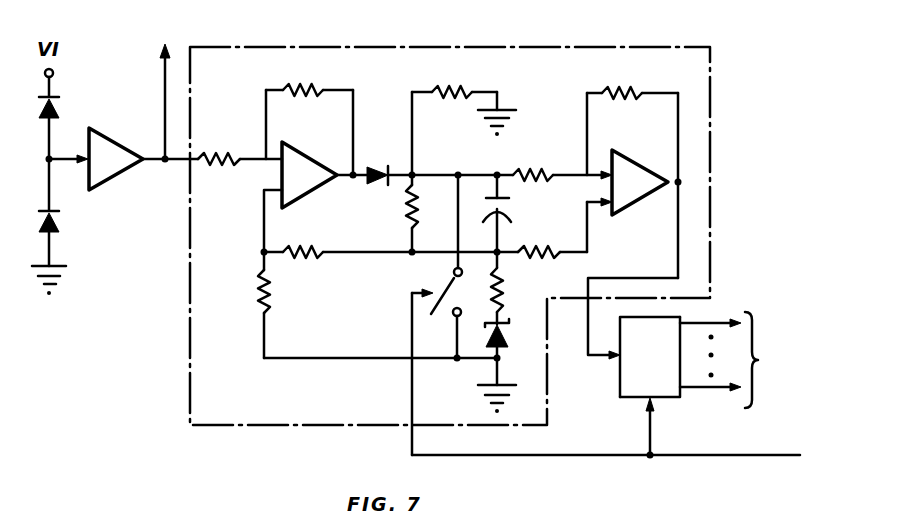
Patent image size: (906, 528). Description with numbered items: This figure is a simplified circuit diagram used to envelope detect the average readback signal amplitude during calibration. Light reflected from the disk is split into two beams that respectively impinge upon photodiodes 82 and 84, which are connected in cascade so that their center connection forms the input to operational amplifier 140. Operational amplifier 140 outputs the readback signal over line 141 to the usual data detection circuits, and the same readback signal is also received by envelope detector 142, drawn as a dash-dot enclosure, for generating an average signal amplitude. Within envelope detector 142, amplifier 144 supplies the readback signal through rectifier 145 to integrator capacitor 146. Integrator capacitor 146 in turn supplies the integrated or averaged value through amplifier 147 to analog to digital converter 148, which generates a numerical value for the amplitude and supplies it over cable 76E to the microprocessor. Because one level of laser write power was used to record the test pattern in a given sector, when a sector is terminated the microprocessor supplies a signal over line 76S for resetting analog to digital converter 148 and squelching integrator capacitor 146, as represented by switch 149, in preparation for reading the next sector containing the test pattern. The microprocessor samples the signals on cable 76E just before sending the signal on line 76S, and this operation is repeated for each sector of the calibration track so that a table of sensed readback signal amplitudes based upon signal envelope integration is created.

The photodiode 82 is at (58, 212).
The photodiode 84 is at (58, 97).
The operational amplifier 140 is at (116, 142).
The line 141 is at (164, 62).
The envelope detector 142 is at (566, 46).
The amplifier 144 is at (312, 158).
The rectifier 145 is at (388, 165).
The integrator capacitor 146 is at (509, 199).
The amplifier 147 is at (638, 162).
The analog to digital converter 148 is at (620, 392).
The switch 149 is at (432, 288).
The cable 76E is at (740, 360).
The line 76S is at (760, 455).